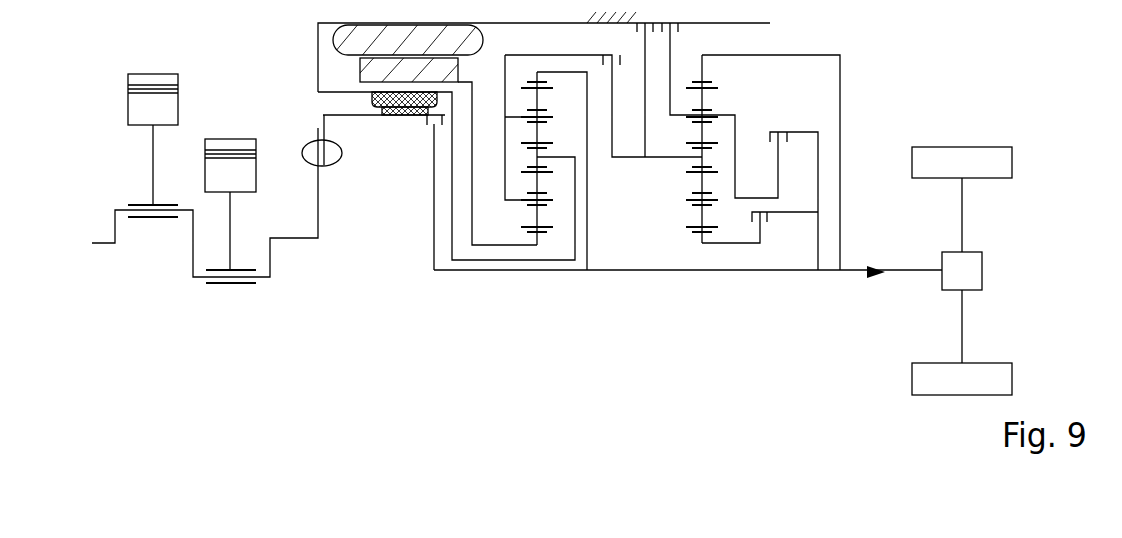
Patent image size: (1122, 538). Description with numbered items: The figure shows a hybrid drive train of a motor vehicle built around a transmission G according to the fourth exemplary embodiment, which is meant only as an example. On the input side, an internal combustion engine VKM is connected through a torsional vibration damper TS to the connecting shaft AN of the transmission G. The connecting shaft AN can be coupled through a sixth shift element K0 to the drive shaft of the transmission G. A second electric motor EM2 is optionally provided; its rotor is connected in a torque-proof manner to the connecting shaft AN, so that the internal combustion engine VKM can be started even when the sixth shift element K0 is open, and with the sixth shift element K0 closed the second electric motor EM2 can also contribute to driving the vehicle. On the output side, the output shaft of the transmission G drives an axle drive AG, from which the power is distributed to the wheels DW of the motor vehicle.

The internal combustion engine VKM is at (207, 305).
The torsional vibration damper TS is at (329, 181).
The connecting shaft AN is at (353, 121).
The second electric motor EM2 is at (397, 122).
The sixth shift element K0 is at (428, 125).
The transmission G is at (651, 314).
The axle drive AG is at (987, 256).
The wheels DW is at (977, 155).